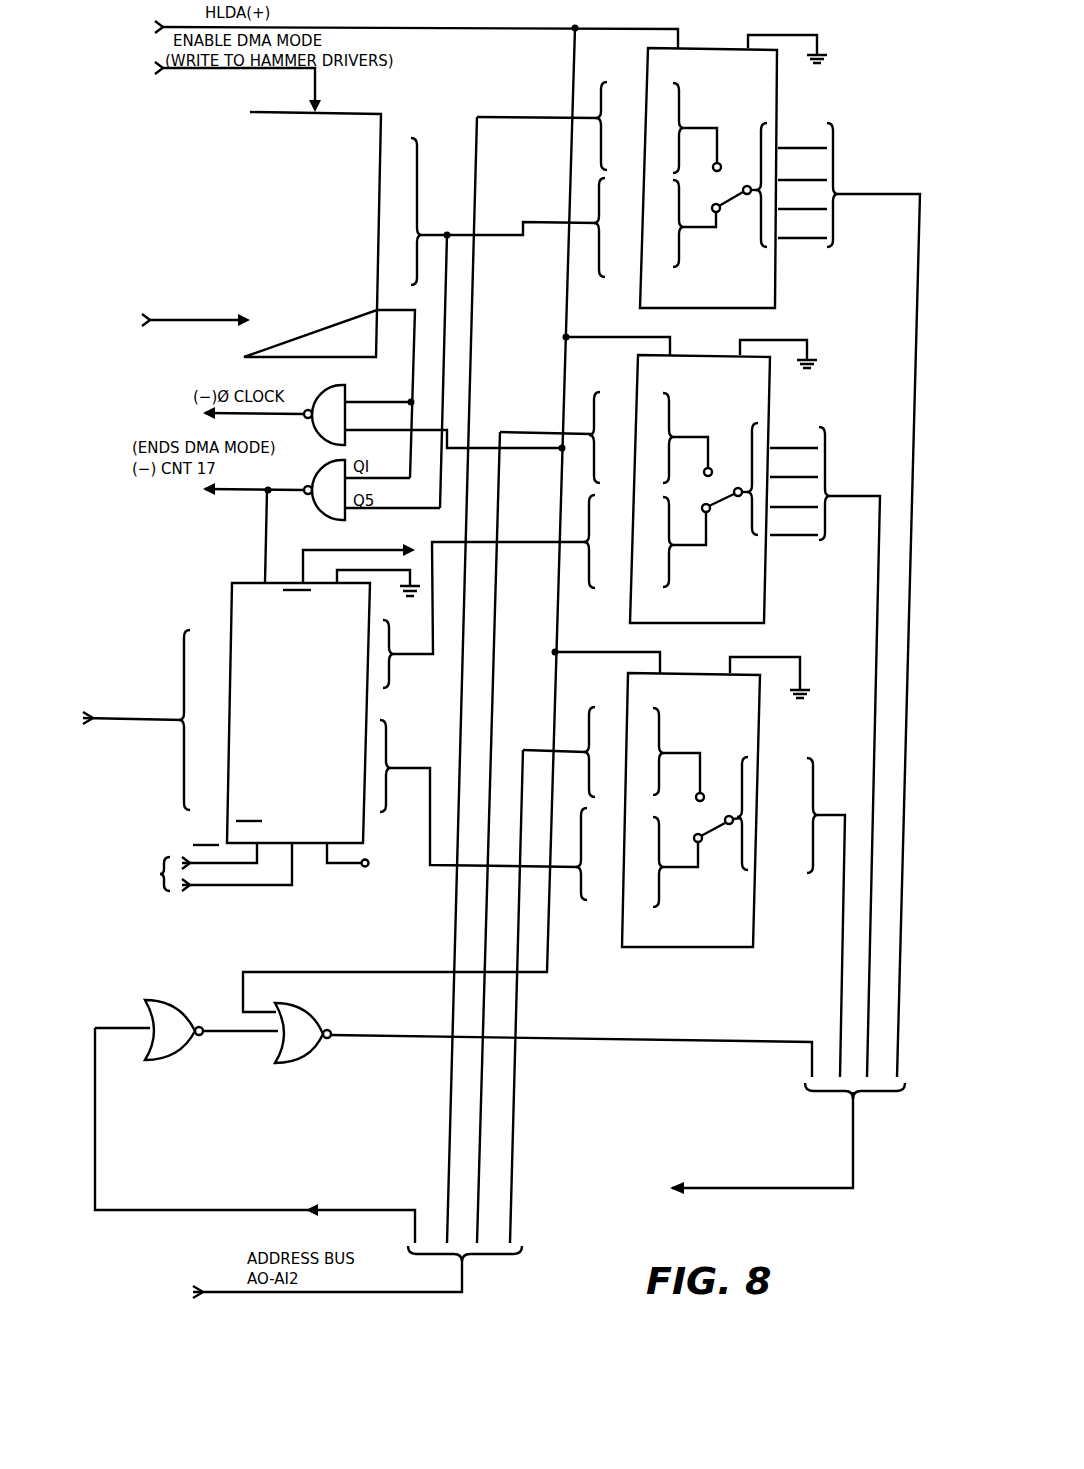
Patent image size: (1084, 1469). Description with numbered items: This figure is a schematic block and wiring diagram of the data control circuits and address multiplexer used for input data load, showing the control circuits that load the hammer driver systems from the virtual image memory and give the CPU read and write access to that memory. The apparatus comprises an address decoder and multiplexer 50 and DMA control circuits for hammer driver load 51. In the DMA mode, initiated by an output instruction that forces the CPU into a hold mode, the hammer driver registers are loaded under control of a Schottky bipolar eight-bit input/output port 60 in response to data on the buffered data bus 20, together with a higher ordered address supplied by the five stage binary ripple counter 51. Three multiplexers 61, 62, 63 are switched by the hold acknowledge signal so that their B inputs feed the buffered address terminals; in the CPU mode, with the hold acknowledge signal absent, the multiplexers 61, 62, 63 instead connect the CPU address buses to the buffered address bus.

The five stage binary ripple counter 51 is at (238, 192).
The eight-bit input/output port 60 is at (289, 697).
The multiplexer 61 is at (774, 291).
The multiplexer 62 is at (766, 597).
The multiplexer 63 is at (755, 926).
The buffered data bus 20 is at (125, 722).
The address decoder and multiplexer 50 is at (645, 1060).